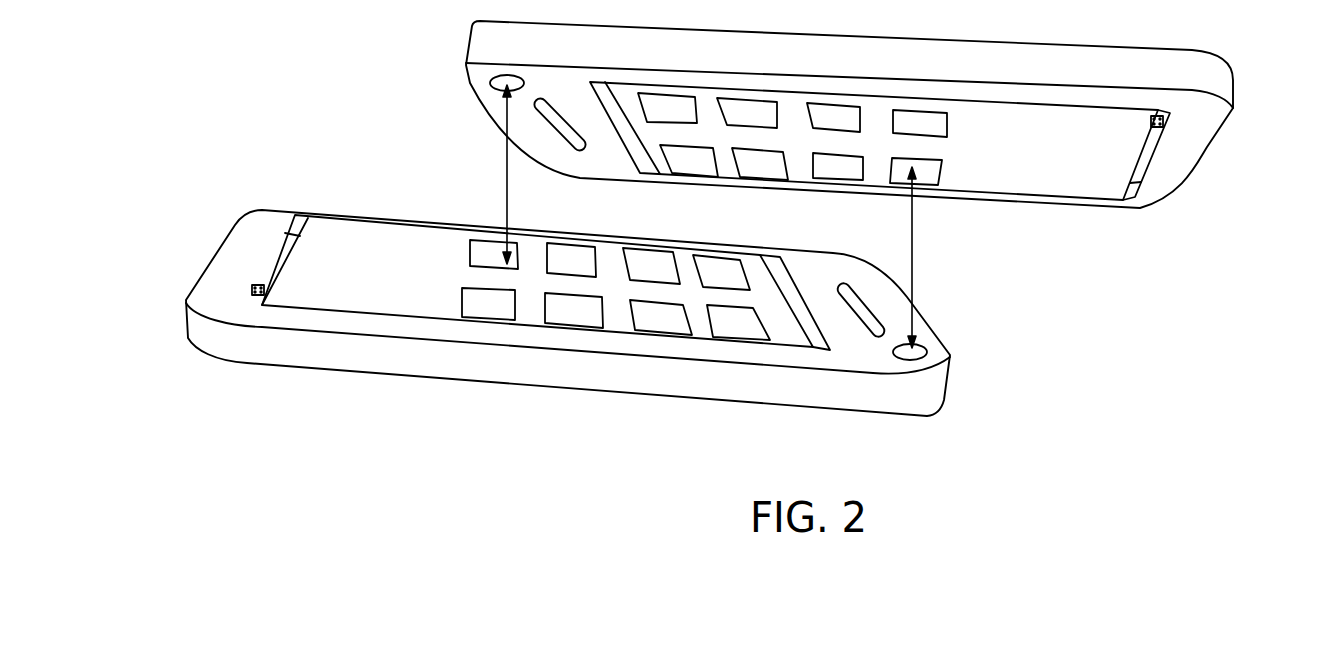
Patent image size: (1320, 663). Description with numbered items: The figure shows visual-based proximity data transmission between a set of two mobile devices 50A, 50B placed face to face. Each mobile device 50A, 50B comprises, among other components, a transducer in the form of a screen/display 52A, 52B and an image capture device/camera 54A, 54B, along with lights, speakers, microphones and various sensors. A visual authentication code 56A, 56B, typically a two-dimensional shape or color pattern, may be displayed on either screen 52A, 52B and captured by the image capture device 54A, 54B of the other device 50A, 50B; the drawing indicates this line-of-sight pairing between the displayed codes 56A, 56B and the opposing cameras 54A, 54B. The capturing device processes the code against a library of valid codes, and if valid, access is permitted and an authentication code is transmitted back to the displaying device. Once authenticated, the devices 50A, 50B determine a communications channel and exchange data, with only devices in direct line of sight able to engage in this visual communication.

The mobile device 50A is at (1207, 157).
The mobile device 50B is at (210, 268).
The screen/display 52A is at (802, 172).
The screen/display 52B is at (590, 242).
The image capture device/camera 54A is at (497, 84).
The image capture device/camera 54B is at (923, 350).
The visual authentication code 56A is at (928, 173).
The visual authentication code 56B is at (492, 262).